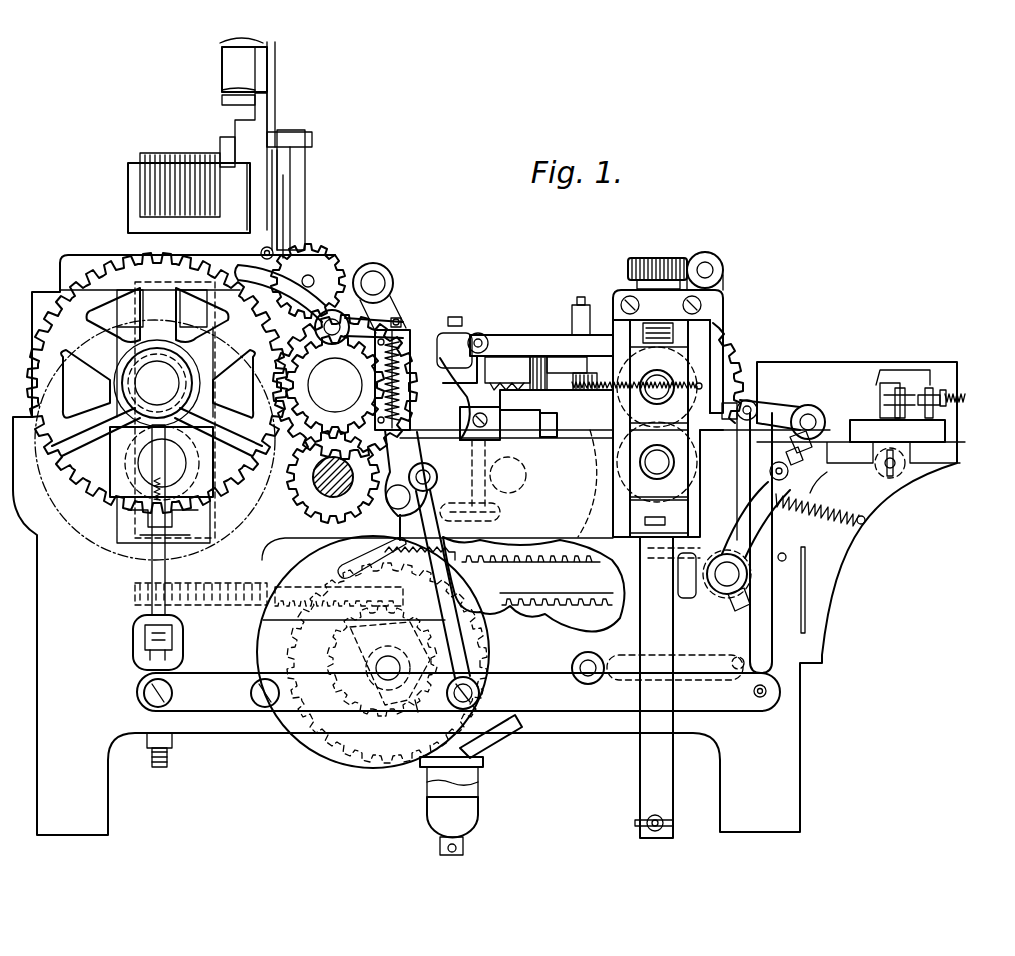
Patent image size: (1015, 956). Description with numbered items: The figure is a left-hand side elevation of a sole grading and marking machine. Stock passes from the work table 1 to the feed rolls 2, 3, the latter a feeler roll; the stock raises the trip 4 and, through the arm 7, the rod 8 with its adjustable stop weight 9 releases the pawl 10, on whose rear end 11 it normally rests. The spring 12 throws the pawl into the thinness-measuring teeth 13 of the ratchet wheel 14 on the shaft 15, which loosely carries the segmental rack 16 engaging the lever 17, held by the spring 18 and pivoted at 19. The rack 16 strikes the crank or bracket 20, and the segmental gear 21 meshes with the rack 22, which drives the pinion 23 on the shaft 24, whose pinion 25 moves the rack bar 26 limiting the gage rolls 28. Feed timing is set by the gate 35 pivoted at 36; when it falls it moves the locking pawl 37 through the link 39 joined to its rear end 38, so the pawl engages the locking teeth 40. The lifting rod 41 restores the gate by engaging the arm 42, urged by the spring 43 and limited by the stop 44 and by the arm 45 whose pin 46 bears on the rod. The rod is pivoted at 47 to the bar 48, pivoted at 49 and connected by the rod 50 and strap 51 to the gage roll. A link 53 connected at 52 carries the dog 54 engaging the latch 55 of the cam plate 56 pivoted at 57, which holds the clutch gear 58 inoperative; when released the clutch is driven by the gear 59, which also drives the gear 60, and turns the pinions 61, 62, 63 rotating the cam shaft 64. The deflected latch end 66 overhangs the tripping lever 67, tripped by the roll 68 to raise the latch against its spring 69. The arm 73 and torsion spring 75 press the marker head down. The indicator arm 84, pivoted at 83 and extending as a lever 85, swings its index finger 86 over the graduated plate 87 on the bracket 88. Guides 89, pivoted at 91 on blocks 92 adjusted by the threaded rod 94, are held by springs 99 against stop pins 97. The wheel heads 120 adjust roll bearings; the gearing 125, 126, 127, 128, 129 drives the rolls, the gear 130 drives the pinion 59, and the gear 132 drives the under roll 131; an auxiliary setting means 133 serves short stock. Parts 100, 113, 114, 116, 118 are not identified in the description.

The work table 1 is at (852, 390).
The feed roll 2 is at (695, 380).
The feed roll 3 is at (705, 473).
The trip 4 is at (458, 398).
The arm 7 is at (526, 336).
The rod 8 is at (489, 368).
The adjustable stop weight 9 is at (493, 418).
The pawl 10 is at (343, 553).
The rear end of pawl 11 is at (500, 512).
The spring 12 is at (391, 553).
The thinness-measuring teeth 13 is at (293, 641).
The ratchet wheel 14 is at (330, 746).
The shaft 15 is at (380, 680).
The segmental rack 16 is at (356, 651).
The lever 17 is at (500, 613).
The spring 18 is at (458, 565).
The pivot 19 is at (748, 576).
The crank or bracket 20 is at (416, 702).
The segmental rack or gear 21 is at (342, 641).
The rack 22 is at (410, 566).
The pinion 23 is at (218, 605).
The shaft 24 is at (225, 550).
The pinion 25 is at (194, 290).
The rack bar 26 is at (148, 288).
The gage roll 28 is at (157, 383).
The gate 35 is at (735, 382).
The pivot 36 is at (813, 416).
The locking pawl 37 is at (506, 746).
The rear end of locking pawl 38 is at (708, 681).
The link 39 is at (755, 641).
The locking teeth 40 is at (481, 693).
The lifting rod 41 is at (773, 538).
The arm 42 is at (765, 405).
The spring 43 is at (840, 512).
The stop 44 is at (787, 557).
The arm 45 is at (769, 472).
The pin 46 is at (826, 490).
The pivot 47 is at (762, 700).
The bar 48 is at (606, 708).
The pivot 49 is at (263, 708).
The rod 50 is at (155, 560).
The strap 51 is at (122, 410).
The pivotal connection 52 is at (420, 762).
The link 53 is at (485, 662).
The dog 54 is at (427, 470).
The latch 55 is at (378, 466).
The cam plate 56 is at (405, 362).
The pivot 57 is at (380, 283).
The clutch gear 58 is at (322, 410).
The gear 59 is at (290, 352).
The gear 60 is at (40, 331).
The pinion 61 is at (336, 310).
The pinion 62 is at (313, 266).
The pinion 63 is at (285, 265).
The cam shaft 64 is at (270, 252).
The laterally deflected end of latch 66 is at (400, 318).
The tripping lever 67 is at (403, 340).
The tripping roll 68 is at (278, 262).
The spring 69 is at (442, 346).
The arm 73 is at (226, 145).
The torsion spring 75 is at (173, 160).
The pivot 83 is at (313, 142).
The indicator arm 84 is at (277, 62).
The lever 85 is at (306, 182).
The index finger 86 is at (222, 49).
The graduated plate 87 is at (237, 72).
The bracket 88 is at (262, 108).
The guide 89 is at (927, 362).
The pivot 91 is at (903, 384).
The block 92 is at (940, 428).
The adjusting rod 94 is at (901, 465).
The stop pin 97 is at (893, 392).
The spring 99 is at (962, 395).
The contact 100 is at (934, 386).
The pin 113 is at (663, 826).
The rod 114 is at (665, 781).
The bearing 116 is at (684, 600).
The knob hub 118 is at (707, 270).
The wheel head 120 is at (657, 261).
The gear 125 is at (720, 328).
The gear 126 is at (598, 498).
The gear 127 is at (556, 604).
The gear 128 is at (330, 486).
The power shaft 129 is at (312, 478).
The gear 130 is at (296, 482).
The under roll 131 is at (122, 482).
The gear 132 is at (92, 565).
The auxiliary setting means 133 is at (537, 380).